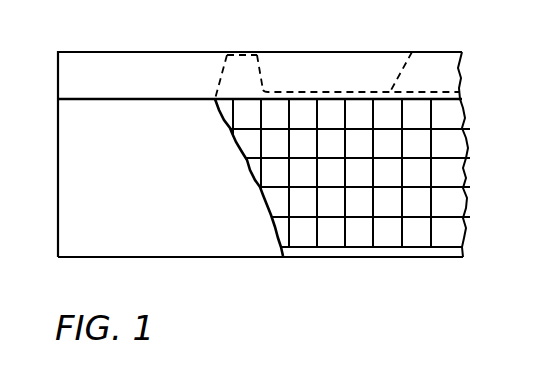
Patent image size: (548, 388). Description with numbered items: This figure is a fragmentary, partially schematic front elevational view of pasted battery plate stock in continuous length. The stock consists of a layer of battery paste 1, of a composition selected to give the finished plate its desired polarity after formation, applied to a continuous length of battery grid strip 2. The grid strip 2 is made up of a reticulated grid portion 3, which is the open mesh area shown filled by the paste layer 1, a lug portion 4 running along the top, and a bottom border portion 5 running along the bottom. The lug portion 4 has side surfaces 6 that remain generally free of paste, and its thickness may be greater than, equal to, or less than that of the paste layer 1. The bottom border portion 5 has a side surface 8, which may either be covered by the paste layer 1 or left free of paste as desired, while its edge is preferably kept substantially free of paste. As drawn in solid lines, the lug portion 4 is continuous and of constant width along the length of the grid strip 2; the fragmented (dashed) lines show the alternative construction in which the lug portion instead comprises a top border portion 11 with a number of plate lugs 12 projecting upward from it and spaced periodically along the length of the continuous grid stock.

The battery paste layer 1 is at (146, 246).
The battery grid strip 2 is at (441, 81).
The reticulated grid portion 3 is at (445, 147).
The lug portion 4 is at (346, 66).
The bottom border portion 5 is at (380, 258).
The side surfaces 6 is at (300, 71).
The side surface 8 is at (457, 250).
The top border portion 11 is at (418, 44).
The plate lugs 12 is at (238, 70).